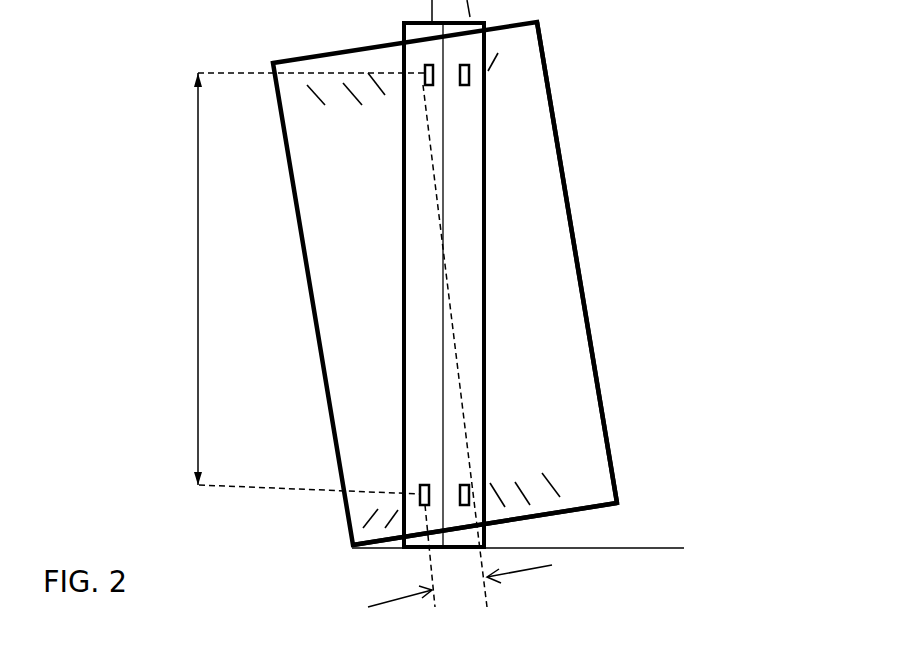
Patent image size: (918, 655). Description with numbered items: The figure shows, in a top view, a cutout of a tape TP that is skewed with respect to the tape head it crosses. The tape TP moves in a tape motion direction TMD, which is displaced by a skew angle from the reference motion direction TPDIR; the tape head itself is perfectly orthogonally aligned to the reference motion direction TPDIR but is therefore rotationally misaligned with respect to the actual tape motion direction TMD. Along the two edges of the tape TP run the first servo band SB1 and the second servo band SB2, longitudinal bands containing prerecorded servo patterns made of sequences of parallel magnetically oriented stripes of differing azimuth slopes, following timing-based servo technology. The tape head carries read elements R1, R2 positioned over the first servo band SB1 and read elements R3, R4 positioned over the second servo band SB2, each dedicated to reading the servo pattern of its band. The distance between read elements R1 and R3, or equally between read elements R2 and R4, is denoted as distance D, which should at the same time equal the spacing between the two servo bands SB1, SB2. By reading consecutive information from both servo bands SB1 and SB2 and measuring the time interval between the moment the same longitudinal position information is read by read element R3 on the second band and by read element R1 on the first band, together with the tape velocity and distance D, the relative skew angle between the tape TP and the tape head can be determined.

The tape TP is at (563, 284).
The read element R1 is at (427, 67).
The read element R2 is at (468, 63).
The read element R3 is at (420, 483).
The read element R4 is at (468, 490).
The first servo band SB1 is at (517, 62).
The second servo band SB2 is at (592, 482).
The tape motion direction TMD is at (603, 198).
The reference motion direction TPDIR is at (615, 199).
The distance D is at (179, 279).